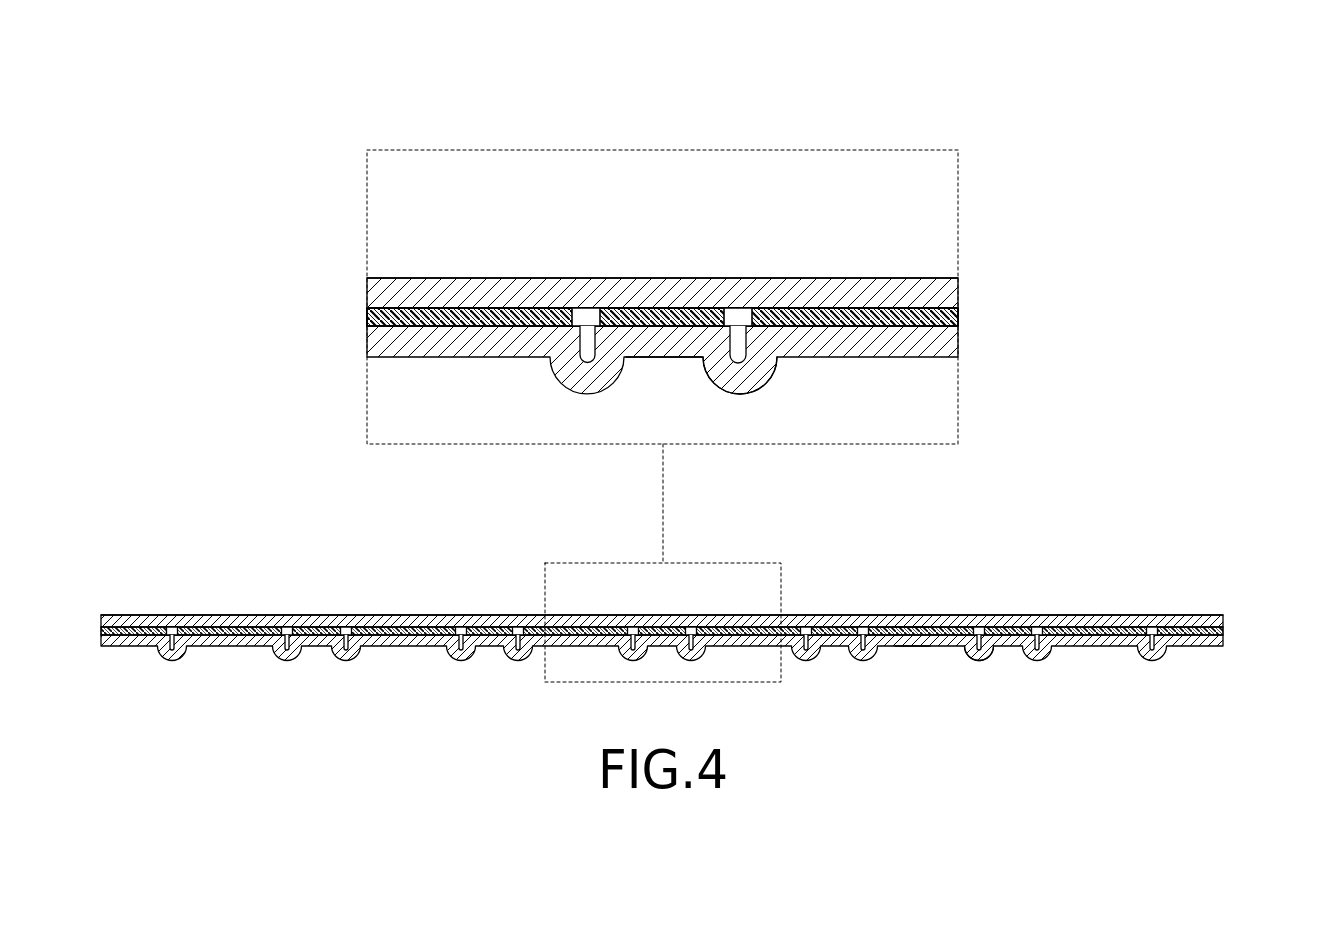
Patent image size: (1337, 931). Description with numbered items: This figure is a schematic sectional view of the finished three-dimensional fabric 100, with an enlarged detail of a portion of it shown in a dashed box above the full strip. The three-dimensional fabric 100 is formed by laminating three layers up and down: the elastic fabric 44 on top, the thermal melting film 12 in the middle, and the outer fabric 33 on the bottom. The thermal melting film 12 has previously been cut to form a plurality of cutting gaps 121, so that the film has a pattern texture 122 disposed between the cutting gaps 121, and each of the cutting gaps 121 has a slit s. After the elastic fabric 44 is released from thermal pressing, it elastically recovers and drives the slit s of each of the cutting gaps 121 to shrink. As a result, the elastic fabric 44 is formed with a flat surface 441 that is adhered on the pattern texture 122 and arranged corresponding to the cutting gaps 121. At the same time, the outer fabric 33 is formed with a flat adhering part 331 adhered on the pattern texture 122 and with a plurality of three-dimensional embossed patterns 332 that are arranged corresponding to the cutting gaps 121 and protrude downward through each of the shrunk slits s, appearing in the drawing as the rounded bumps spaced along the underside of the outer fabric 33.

The three-dimensional fabric 100 is at (684, 57).
The elastic fabric 44 is at (897, 276).
The flat surface 441 is at (826, 278).
The thermal melting film 12 is at (961, 317).
The cutting gaps 121 is at (738, 316).
The pattern texture 122 is at (663, 310).
The slit s is at (588, 308).
The outer fabric 33 is at (907, 358).
The flat adhering part 331 is at (664, 340).
The three-dimensional embossed patterns 332 is at (744, 374).